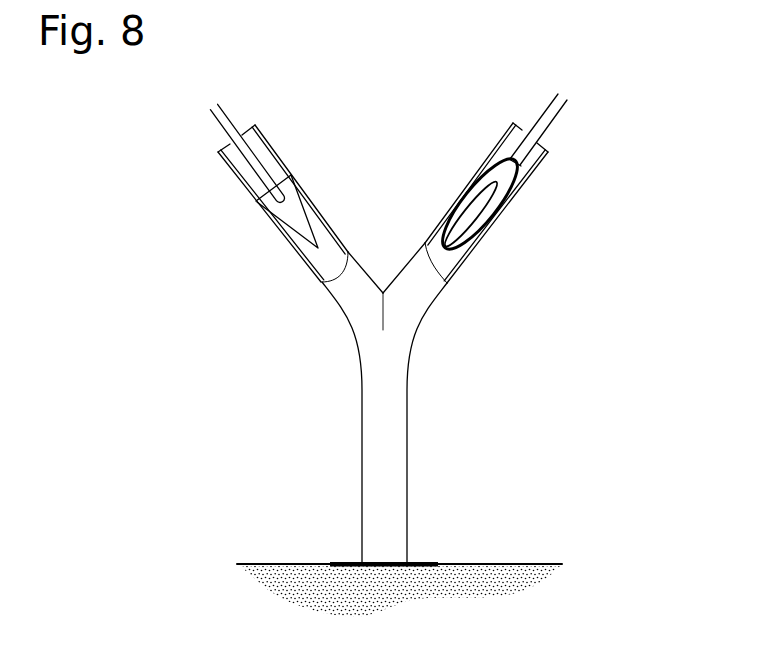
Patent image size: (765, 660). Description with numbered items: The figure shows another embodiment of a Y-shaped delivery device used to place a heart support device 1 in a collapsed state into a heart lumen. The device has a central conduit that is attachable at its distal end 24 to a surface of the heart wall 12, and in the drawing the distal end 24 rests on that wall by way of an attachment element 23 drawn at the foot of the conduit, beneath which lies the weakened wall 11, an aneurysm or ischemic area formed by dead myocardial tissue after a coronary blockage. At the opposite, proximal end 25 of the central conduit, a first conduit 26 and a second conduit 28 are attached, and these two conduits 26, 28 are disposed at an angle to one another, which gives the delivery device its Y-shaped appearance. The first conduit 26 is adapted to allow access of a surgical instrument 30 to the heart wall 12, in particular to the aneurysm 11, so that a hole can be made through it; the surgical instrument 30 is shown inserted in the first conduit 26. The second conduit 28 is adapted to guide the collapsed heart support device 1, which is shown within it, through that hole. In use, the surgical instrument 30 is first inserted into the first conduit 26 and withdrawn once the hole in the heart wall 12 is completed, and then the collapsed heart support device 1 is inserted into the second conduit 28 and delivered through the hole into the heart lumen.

The heart support device 1 is at (490, 216).
The weakened wall 11 is at (390, 566).
The heart wall 12 is at (275, 564).
The anchor pad 23 is at (409, 562).
The distal end 24 is at (387, 410).
The proximal end 25 is at (305, 268).
The first conduit 26 is at (228, 151).
The second conduit 28 is at (535, 151).
The surgical instrument 30 is at (222, 115).